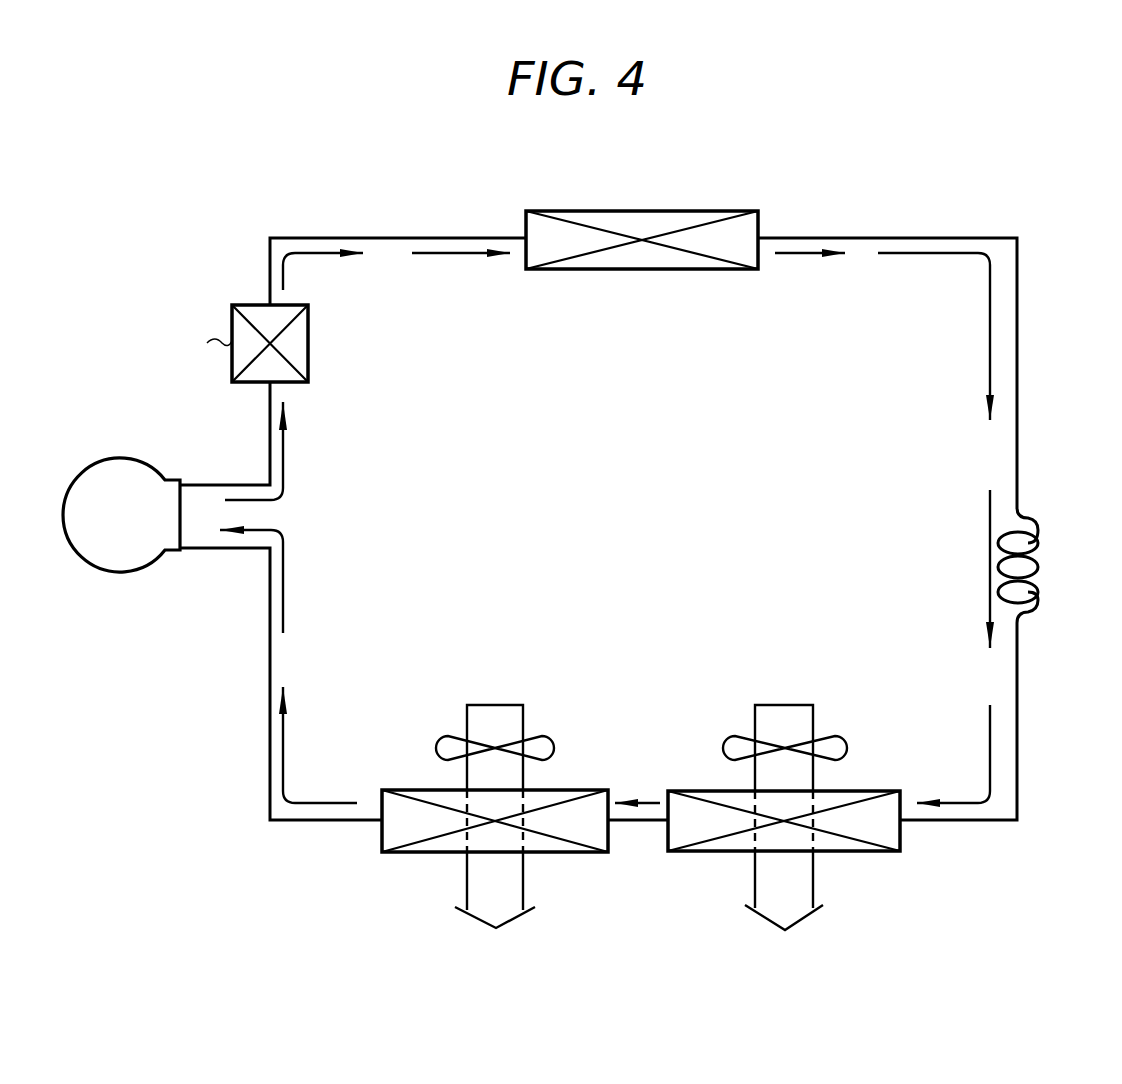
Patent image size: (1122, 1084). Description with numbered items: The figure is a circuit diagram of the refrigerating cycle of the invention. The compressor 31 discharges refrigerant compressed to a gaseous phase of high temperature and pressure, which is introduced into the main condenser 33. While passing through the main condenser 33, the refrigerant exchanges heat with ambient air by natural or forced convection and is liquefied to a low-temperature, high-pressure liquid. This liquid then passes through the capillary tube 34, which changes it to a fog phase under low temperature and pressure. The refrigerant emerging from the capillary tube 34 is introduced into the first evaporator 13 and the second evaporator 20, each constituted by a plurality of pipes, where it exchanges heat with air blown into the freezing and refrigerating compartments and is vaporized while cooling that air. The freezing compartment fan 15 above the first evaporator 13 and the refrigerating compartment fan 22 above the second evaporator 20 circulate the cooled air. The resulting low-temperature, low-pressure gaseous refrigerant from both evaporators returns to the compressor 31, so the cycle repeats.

The compressor 31 is at (127, 458).
The main condenser 33 is at (733, 211).
The capillary tube 34 is at (1020, 512).
The first evaporator 13 is at (585, 852).
The freezing compartment fan 15 is at (543, 740).
The second evaporator 20 is at (880, 851).
The refrigerating compartment fan 22 is at (832, 737).